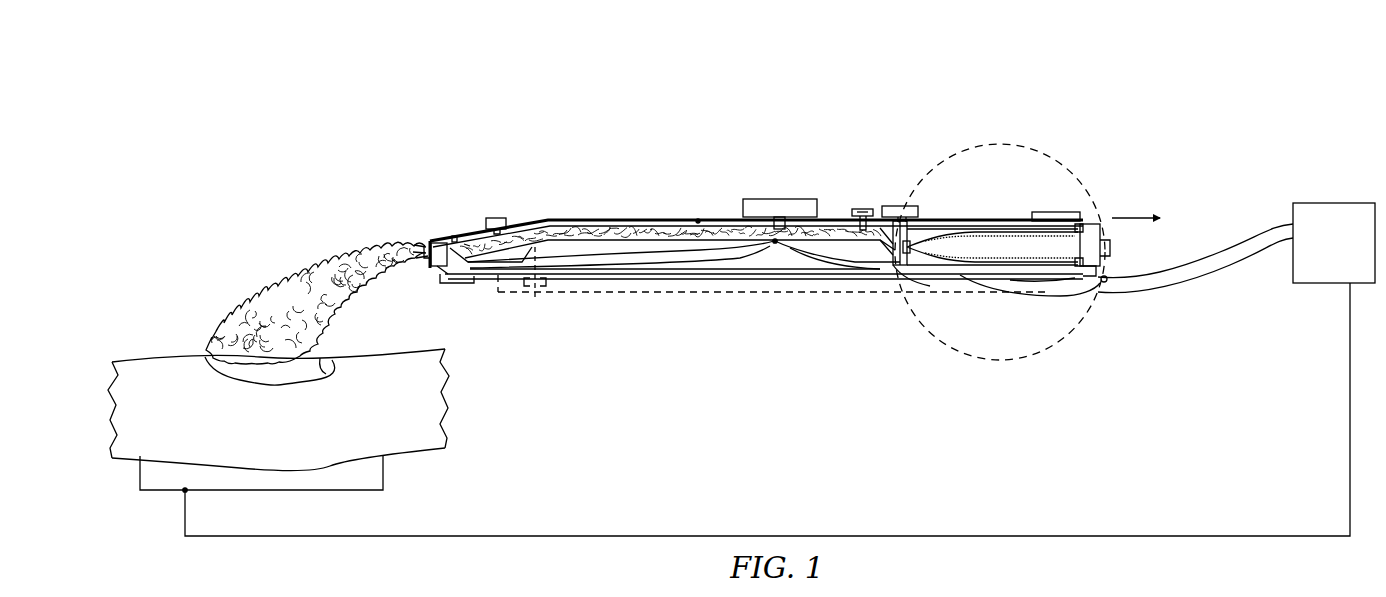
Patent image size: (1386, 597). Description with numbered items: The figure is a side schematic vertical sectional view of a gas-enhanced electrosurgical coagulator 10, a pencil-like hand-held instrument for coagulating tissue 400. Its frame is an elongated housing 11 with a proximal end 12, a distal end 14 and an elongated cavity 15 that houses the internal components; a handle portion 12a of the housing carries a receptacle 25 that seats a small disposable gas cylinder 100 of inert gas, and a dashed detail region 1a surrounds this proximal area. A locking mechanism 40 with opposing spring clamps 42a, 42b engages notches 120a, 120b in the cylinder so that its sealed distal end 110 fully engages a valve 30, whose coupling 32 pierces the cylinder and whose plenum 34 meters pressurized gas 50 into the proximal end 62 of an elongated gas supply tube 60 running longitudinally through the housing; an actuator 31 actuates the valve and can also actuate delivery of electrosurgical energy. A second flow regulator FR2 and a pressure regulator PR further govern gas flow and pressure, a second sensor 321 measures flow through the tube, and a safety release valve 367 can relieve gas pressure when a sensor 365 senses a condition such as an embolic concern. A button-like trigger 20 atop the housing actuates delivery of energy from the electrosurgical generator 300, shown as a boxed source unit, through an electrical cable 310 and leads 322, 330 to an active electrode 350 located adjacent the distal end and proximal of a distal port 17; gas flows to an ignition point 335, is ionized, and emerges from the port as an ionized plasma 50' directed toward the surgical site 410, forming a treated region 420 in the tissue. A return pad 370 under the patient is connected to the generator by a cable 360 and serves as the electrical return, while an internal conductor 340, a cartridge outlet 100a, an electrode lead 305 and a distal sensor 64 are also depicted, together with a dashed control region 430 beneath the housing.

The gas coagulator 10 is at (748, 140).
The elongated housing 11 is at (714, 222).
The proximal end 12 is at (1003, 230).
The handle portion 12a is at (935, 291).
The detail region 1a is at (1012, 358).
The distal end 14 is at (455, 236).
The elongated cavity 15 is at (698, 219).
The distal port 17 is at (426, 246).
The trigger 20 is at (781, 199).
The receptacle 25 is at (982, 227).
The valve 30 is at (905, 201).
The actuator 31 is at (893, 220).
The coupling 32 is at (910, 226).
The plenum 34 is at (880, 206).
The locking mechanism 40 is at (1052, 212).
The spring clamp 42a is at (1083, 224).
The spring clamp 42b is at (1078, 267).
The pressurized gas 50 is at (670, 213).
The ionized gas plasma 50' is at (315, 294).
The gas supply tube 60 is at (593, 227).
The proximal end of supply tube 62 is at (855, 216).
The temperature sensor 64 is at (470, 236).
The gas cylinder 100 is at (1113, 243).
The cartridge outlet 100a is at (1098, 280).
The distal end of cylinder 110 is at (911, 247).
The notch 120a is at (1102, 224).
The notch 120b is at (1110, 246).
The electrosurgical generator 300 is at (1322, 284).
The electrode lead 305 is at (1015, 292).
The electrical cable 310 is at (1178, 280).
The second sensor 321 is at (775, 243).
The lead 322 is at (836, 270).
The lead 330 is at (891, 267).
The ignition point 335 is at (432, 240).
The return conductor 340 is at (608, 270).
The active electrode 350 is at (435, 268).
The cable 360 is at (762, 536).
The sensor 365 is at (466, 282).
The safety release valve 367 is at (537, 297).
The return pad 370 is at (383, 478).
The tissue 400 is at (291, 426).
The surgical site 410 is at (267, 345).
The treated region 420 is at (325, 372).
The control region 430 is at (664, 293).
The second flow regulator FR2 is at (497, 217).
The pressure regulator PR is at (862, 209).